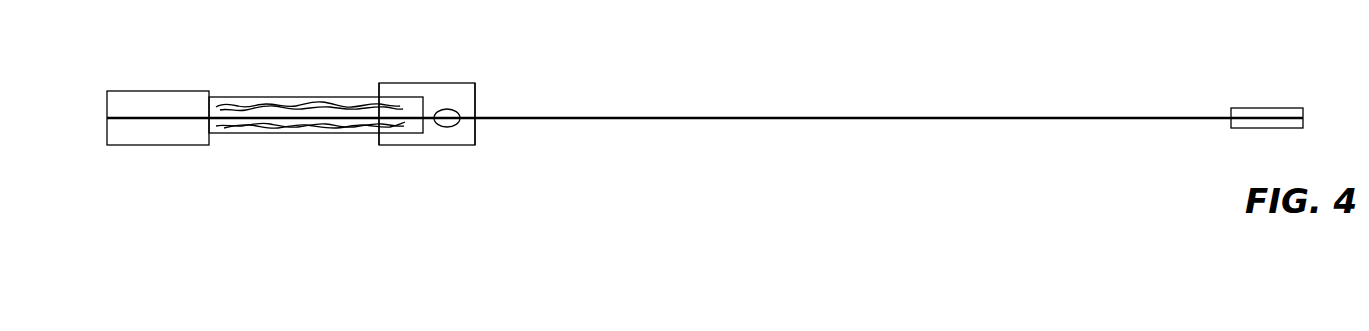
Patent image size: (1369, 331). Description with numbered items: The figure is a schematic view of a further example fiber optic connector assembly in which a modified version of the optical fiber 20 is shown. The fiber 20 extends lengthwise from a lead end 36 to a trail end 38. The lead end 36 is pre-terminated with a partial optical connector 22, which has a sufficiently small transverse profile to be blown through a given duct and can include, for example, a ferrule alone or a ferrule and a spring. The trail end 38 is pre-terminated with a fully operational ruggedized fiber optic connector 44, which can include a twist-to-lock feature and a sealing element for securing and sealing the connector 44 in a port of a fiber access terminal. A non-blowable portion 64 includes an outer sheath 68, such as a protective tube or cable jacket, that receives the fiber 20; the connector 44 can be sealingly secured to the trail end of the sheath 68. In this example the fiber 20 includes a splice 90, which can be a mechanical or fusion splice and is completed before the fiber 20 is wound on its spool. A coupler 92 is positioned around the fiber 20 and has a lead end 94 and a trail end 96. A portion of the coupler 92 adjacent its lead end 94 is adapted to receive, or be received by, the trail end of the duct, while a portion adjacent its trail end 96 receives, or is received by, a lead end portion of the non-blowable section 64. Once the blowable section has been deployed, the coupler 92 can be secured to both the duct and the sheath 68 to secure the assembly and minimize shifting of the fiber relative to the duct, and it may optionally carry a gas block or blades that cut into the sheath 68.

The optical fiber 20 is at (705, 153).
The partial optical connector 22 is at (1288, 69).
The lead end 36 is at (1270, 90).
The trail end 38 is at (107, 118).
The ruggedized fiber optic connector 44 is at (133, 159).
The non-blowable portion 64 is at (272, 97).
The outer sheath 68 is at (297, 97).
The splice 90 is at (447, 112).
The coupler 92 is at (423, 83).
The lead end 94 is at (475, 103).
The trail end 96 is at (378, 95).